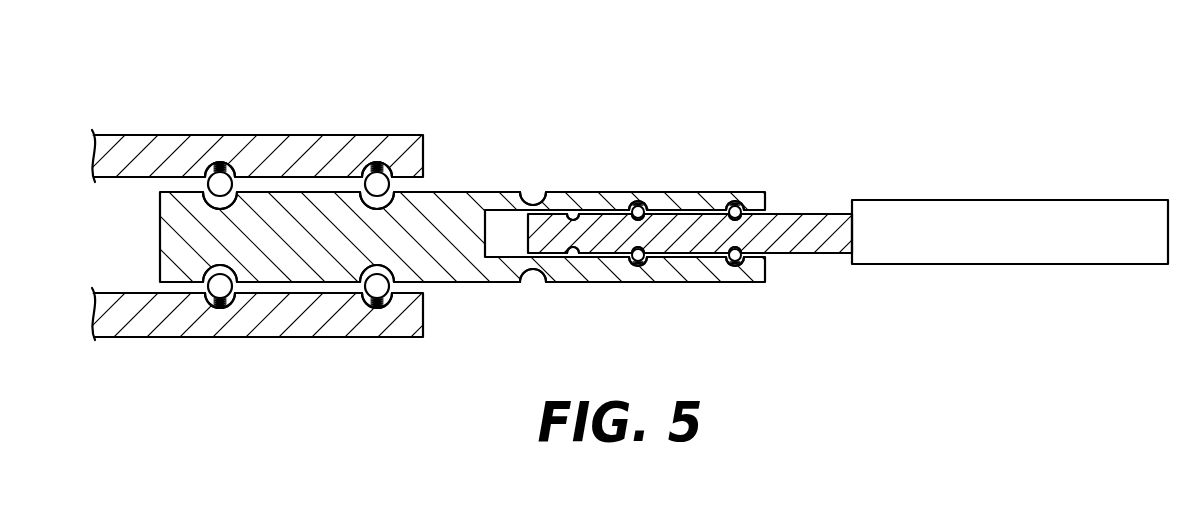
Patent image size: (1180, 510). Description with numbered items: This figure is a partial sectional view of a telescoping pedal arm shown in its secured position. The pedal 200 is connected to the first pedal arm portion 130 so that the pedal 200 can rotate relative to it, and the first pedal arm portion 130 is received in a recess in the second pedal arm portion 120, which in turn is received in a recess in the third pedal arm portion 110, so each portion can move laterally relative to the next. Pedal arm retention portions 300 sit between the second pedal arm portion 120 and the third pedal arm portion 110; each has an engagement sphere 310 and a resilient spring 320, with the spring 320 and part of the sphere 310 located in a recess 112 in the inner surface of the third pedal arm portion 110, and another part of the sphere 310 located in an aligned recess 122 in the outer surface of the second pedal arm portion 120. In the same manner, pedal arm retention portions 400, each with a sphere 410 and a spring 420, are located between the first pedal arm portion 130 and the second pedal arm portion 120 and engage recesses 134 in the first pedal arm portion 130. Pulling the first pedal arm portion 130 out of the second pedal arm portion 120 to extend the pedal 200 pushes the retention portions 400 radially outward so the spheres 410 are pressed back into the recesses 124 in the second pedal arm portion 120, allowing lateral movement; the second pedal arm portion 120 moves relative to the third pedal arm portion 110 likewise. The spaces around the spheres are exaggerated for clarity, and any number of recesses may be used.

The third pedal arm portion 110 is at (290, 143).
The recesses 112 is at (207, 166).
The second pedal arm portion 120 is at (467, 196).
The recesses 122 is at (390, 191).
The recesses 124 is at (737, 200).
The first pedal arm portion 130 is at (827, 220).
The recesses 134 is at (575, 210).
The pedal 200 is at (975, 210).
The pedal arm retention portion 300 is at (262, 226).
The sphere 310 is at (233, 183).
The spring 320 is at (219, 161).
The pedal arm retention portion 400 is at (673, 224).
The spheres 410 is at (641, 207).
The spring 420 is at (638, 201).